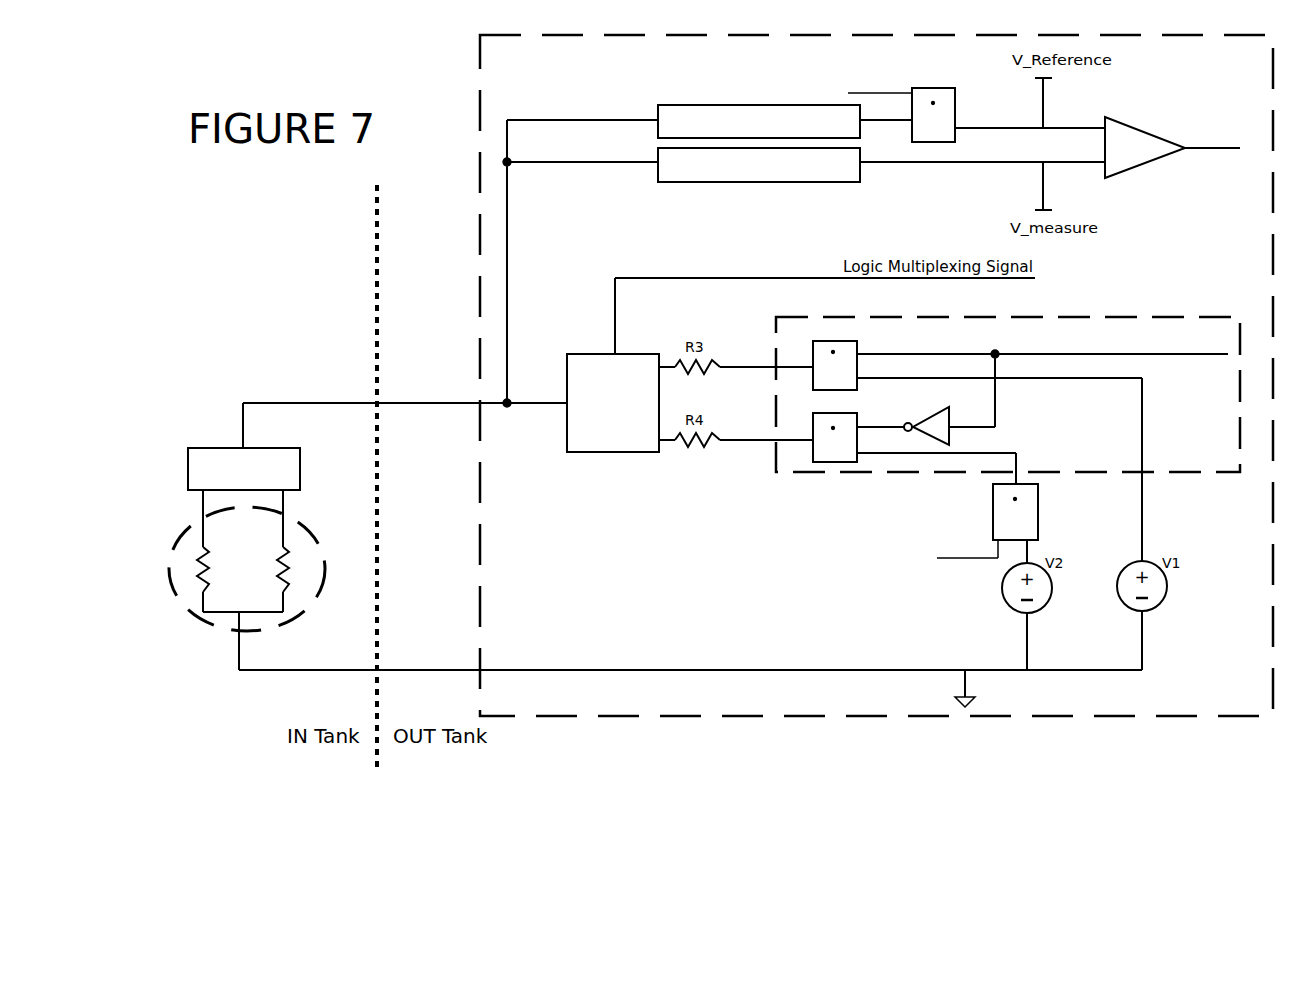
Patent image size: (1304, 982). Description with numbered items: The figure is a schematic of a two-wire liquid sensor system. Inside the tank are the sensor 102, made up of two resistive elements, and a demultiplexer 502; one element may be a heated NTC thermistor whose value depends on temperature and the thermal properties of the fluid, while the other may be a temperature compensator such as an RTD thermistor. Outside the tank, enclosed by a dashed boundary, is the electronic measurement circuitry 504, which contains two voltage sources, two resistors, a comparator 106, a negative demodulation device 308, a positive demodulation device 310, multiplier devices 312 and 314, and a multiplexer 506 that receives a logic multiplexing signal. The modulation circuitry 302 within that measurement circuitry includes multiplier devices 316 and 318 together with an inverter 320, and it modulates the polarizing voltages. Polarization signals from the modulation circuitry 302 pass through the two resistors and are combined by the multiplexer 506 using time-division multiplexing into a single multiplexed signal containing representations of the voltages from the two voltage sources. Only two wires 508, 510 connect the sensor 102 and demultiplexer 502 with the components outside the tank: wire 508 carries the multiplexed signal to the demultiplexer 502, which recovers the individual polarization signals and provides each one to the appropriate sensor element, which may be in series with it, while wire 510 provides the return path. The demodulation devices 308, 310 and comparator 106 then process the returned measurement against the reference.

The sensor 102 is at (196, 618).
The comparator 106 is at (1160, 112).
The modulation circuitry 302 is at (1163, 315).
The negative demodulation device 308 is at (737, 105).
The positive demodulation device 310 is at (738, 182).
The multiplier device 312 is at (935, 88).
The multiplier device 314 is at (1040, 503).
The multiplier device 316 is at (827, 340).
The multiplier device 318 is at (828, 464).
The inverter 320 is at (933, 421).
The demultiplexer 502 is at (210, 448).
The electronic measurement circuitry 504 is at (618, 718).
The multiplexer 506 is at (594, 353).
The wire 508 is at (427, 400).
The wire 510 is at (422, 667).